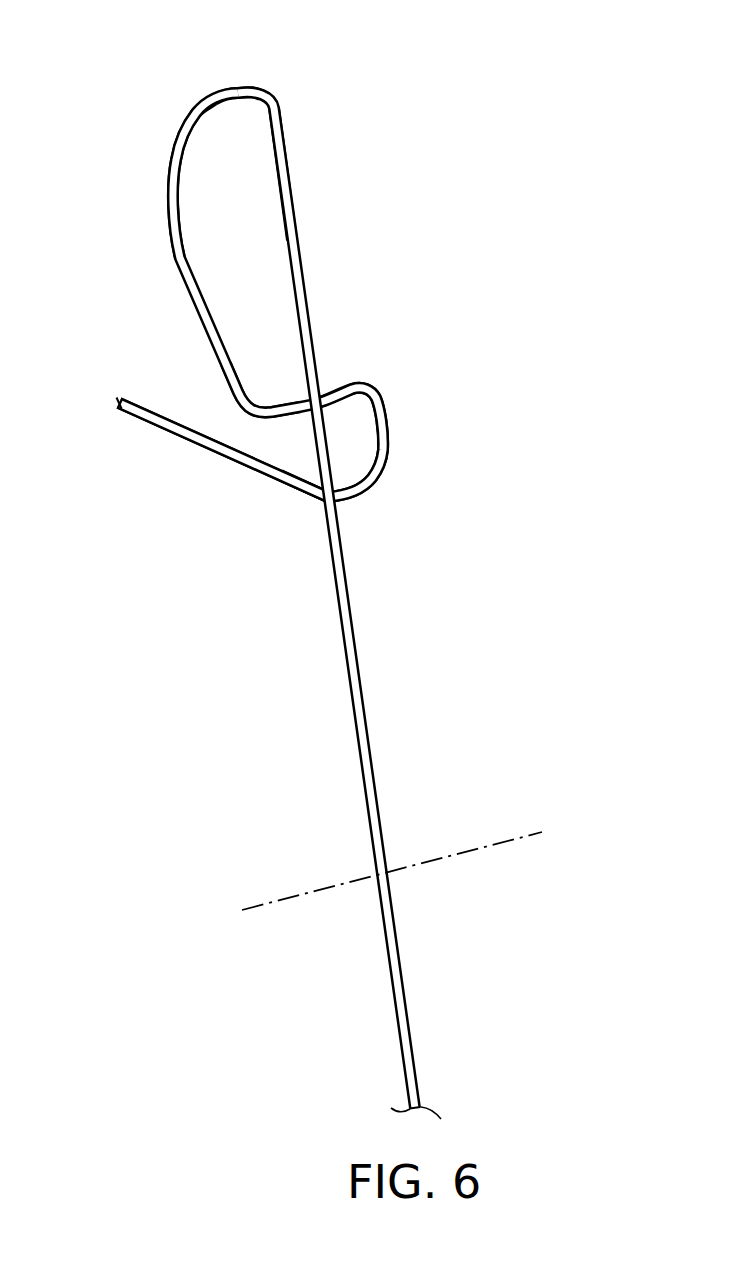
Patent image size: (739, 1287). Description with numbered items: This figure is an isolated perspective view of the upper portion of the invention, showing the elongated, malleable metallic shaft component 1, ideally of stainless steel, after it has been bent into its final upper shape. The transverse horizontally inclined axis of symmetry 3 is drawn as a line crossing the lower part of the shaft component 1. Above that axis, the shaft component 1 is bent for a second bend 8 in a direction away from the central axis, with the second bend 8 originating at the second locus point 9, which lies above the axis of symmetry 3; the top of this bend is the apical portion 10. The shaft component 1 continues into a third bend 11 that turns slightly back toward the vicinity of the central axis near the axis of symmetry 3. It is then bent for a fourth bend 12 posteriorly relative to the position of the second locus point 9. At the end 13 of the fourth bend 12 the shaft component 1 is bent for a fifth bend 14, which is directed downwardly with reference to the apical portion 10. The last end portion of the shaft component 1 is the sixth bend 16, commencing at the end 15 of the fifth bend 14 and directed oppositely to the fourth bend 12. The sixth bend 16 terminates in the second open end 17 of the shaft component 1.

The shaft component 1 is at (350, 602).
The transverse horizontally inclined axis of symmetry 3 is at (391, 875).
The second bend 8 is at (188, 130).
The second locus point 9 is at (265, 97).
The apical portion 10 is at (241, 87).
The third bend 11 is at (166, 227).
The fourth bend 12 is at (254, 404).
The end of fourth bend 13 is at (360, 386).
The fifth bend 14 is at (383, 410).
The end of fifth bend 15 is at (334, 502).
The sixth bend 16 is at (322, 502).
The second open end 17 is at (115, 400).